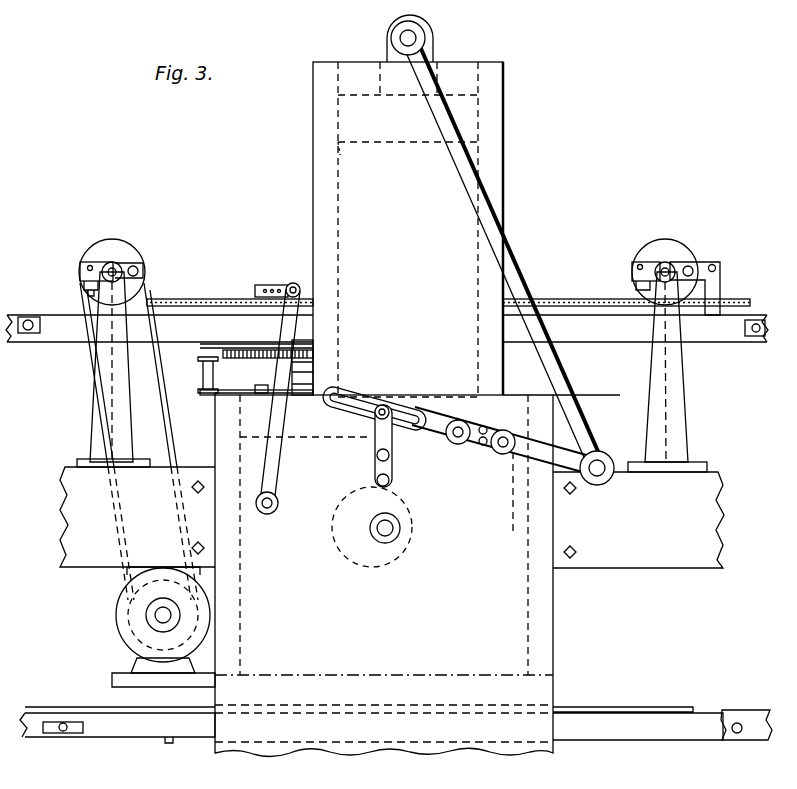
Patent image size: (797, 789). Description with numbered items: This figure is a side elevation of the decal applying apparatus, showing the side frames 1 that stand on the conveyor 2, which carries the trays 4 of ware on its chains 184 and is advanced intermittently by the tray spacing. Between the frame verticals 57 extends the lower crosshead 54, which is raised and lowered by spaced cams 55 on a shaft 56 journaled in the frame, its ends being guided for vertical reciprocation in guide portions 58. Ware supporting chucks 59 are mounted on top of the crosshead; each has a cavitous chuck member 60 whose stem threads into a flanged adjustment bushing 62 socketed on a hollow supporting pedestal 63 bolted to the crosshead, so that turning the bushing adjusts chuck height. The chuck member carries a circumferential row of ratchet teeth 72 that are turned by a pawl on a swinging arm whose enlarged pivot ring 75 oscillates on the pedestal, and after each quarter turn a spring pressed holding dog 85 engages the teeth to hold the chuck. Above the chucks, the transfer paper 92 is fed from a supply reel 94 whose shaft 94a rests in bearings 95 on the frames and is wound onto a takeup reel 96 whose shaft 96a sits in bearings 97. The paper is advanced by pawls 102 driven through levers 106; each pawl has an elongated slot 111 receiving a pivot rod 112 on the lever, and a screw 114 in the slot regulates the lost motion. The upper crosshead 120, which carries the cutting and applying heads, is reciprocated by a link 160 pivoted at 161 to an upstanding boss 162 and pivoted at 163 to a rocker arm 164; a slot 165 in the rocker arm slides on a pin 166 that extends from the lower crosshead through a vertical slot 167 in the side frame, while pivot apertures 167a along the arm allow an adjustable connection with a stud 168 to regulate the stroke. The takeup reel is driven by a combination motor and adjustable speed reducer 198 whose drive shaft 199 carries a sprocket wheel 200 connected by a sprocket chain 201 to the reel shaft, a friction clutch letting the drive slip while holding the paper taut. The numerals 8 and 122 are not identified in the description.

The side frames 1 is at (72, 707).
The conveyor 2 is at (28, 332).
The trays 4 is at (50, 344).
The rail fastener 8 is at (169, 745).
The lower crosshead 54 is at (345, 452).
The cams 55 is at (368, 568).
The shaft 56 is at (392, 537).
The frame verticals 57 is at (460, 78).
The guide portions 58 is at (243, 640).
The ware supporting chucks 59 is at (250, 345).
The chuck member 60 is at (215, 372).
The adjustment bushing 62 is at (313, 362).
The supporting pedestal 63 is at (298, 382).
The ratchet teeth 72 is at (242, 360).
The pivot ring 75 is at (268, 392).
The holding dog 85 is at (199, 368).
The transfer paper 92 is at (592, 304).
The reel 94 is at (664, 244).
The reel shaft 94a is at (668, 268).
The bearings 95 is at (657, 258).
The takeup reel 96 is at (96, 250).
The reel shaft 96a is at (114, 268).
The bearings 97 is at (80, 266).
The pawls 102 is at (297, 284).
The levers 106 is at (240, 425).
The slot 111 is at (285, 300).
The pivot rod 112 is at (280, 286).
The screw 114 is at (255, 291).
The crosshead 120 is at (480, 115).
The housing partition 122 is at (340, 157).
The link 160 is at (500, 262).
The pivotal connection 161 is at (392, 38).
The boss 162 is at (430, 60).
The pivotal connection 163 is at (605, 476).
The rocker arm 164 is at (447, 420).
The slot 165 is at (345, 402).
The pin 166 is at (387, 406).
The vertical slot 167 is at (372, 445).
The pivot apertures 167a is at (458, 445).
The stud 168 is at (486, 428).
The chains 184 is at (28, 320).
The combination motor and adjustable speed reducer 198 is at (117, 622).
The drive shaft 199 is at (128, 592).
The sprocket wheel 200 is at (139, 441).
The sprocket chain 201 is at (130, 383).